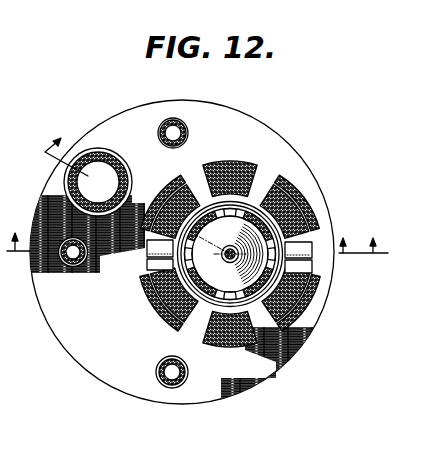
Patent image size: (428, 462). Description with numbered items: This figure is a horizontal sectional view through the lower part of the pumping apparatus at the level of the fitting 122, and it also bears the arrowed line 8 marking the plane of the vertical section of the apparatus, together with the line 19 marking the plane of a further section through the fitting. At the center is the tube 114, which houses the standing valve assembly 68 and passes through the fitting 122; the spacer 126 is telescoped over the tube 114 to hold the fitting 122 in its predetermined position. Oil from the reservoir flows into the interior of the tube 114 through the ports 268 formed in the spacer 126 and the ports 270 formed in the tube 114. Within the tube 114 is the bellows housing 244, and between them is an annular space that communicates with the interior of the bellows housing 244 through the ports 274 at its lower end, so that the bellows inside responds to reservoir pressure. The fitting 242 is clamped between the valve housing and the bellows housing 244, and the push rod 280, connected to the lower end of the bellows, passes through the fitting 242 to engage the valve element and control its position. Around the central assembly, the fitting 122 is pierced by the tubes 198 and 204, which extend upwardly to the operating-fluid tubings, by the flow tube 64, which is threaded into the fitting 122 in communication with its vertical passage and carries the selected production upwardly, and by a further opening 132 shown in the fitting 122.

The arrowed line 8— 8 is at (197, 232).
The section line 19— 19 is at (201, 186).
The flow tube 64 is at (88, 176).
The standing valve assembly 68 is at (243, 191).
The tube 114 is at (299, 212).
The fitting 122 is at (93, 359).
The spacer 126 is at (238, 161).
The bolt hole 132 is at (63, 267).
The tube 198 is at (172, 388).
The tube 204 is at (187, 130).
The fitting 242 is at (291, 294).
The bellows housing 244 is at (281, 306).
The ports 268 is at (299, 181).
The ports 270 is at (278, 195).
The ports 274 is at (185, 319).
The push rod 280 is at (230, 260).